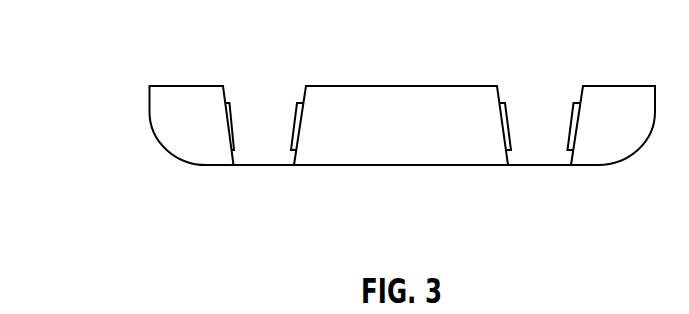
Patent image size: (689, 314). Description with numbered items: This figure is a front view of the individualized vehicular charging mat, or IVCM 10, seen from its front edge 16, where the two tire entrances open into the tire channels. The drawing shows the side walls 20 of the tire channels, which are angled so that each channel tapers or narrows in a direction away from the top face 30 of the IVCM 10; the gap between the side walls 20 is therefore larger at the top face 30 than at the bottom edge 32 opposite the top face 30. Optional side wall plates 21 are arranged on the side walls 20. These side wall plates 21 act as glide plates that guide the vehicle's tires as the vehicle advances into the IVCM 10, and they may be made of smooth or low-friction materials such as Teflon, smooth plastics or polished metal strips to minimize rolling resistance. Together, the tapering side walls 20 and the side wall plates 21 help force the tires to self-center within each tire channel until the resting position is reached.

The IVCM 10 is at (109, 55).
The front edge 16 is at (401, 90).
The side walls 20 is at (223, 88).
The side wall plates 21 is at (234, 150).
The top face 30 is at (401, 86).
The bottom edge 32 is at (402, 166).